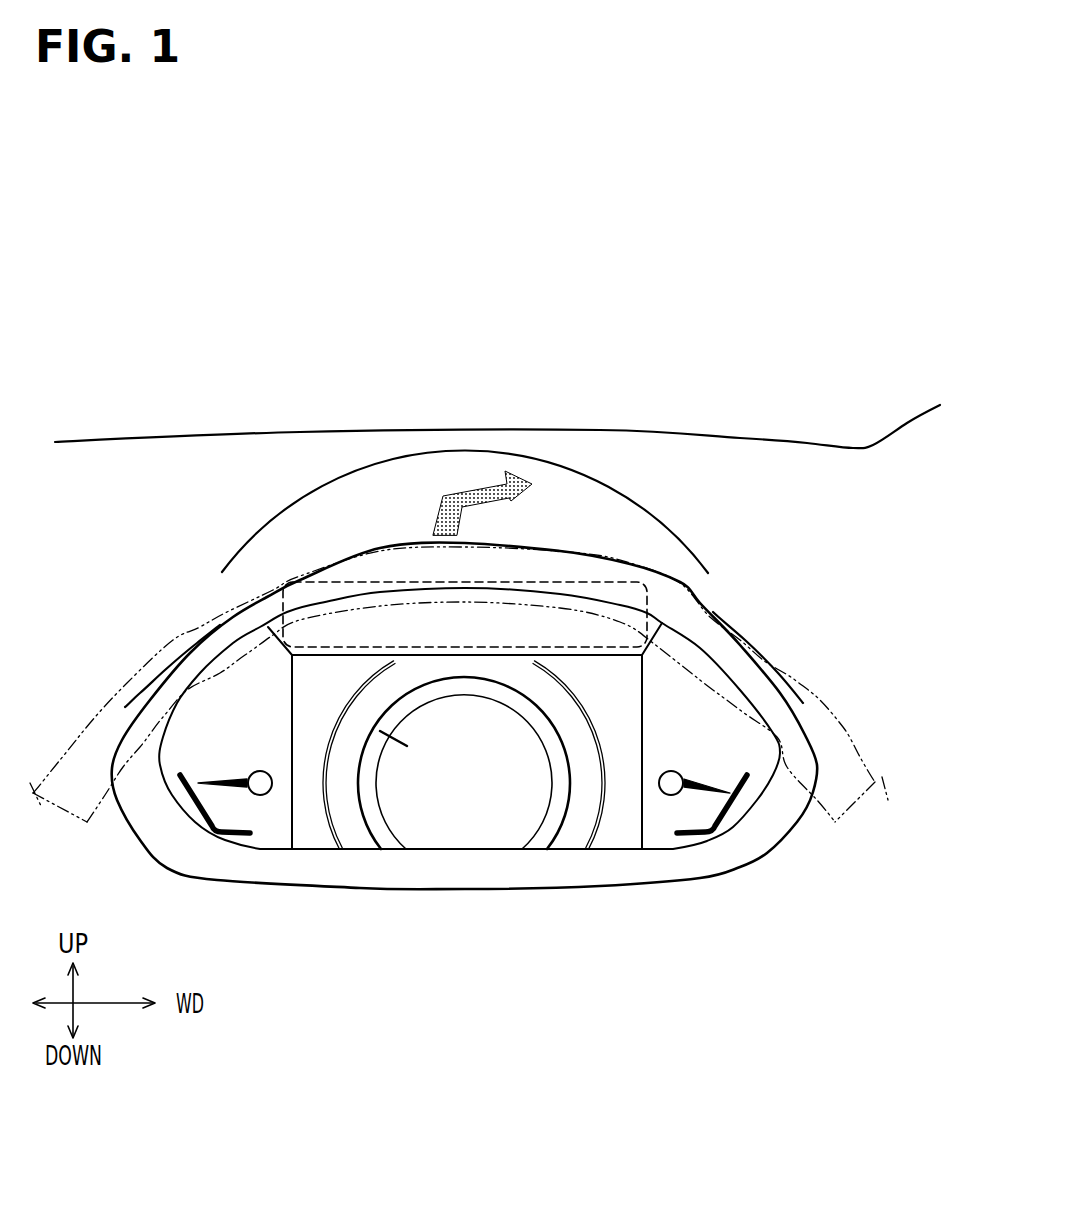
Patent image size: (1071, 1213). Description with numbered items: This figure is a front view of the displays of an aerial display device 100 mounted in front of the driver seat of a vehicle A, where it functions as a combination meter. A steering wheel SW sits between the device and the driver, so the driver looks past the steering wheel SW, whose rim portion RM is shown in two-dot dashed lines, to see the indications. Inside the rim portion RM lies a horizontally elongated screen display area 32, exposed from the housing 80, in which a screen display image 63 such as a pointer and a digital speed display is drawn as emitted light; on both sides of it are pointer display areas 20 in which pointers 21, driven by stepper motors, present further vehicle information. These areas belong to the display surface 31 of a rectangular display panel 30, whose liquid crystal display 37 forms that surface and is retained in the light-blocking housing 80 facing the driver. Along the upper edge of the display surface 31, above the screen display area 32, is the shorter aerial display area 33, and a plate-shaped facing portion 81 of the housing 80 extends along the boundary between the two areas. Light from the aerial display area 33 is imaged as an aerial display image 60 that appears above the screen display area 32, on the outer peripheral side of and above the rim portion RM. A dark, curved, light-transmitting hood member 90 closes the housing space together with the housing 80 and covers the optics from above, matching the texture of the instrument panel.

The pointer display area 20 is at (271, 830).
The pointer 21 is at (215, 767).
The display panel 30 is at (483, 822).
The display surface 31 is at (464, 772).
The screen display area 32 is at (353, 828).
The aerial display area 33 is at (608, 578).
The liquid crystal display 37 is at (611, 828).
The aerial display image 60 is at (334, 516).
The screen display image 63 is at (405, 835).
The housing 80 is at (183, 850).
The facing portion 81 is at (280, 635).
The hood member 90 is at (697, 627).
The aerial display device 100 is at (749, 852).
The vehicle A is at (855, 390).
The rim portion RM is at (131, 680).
The steering wheel SW is at (827, 690).